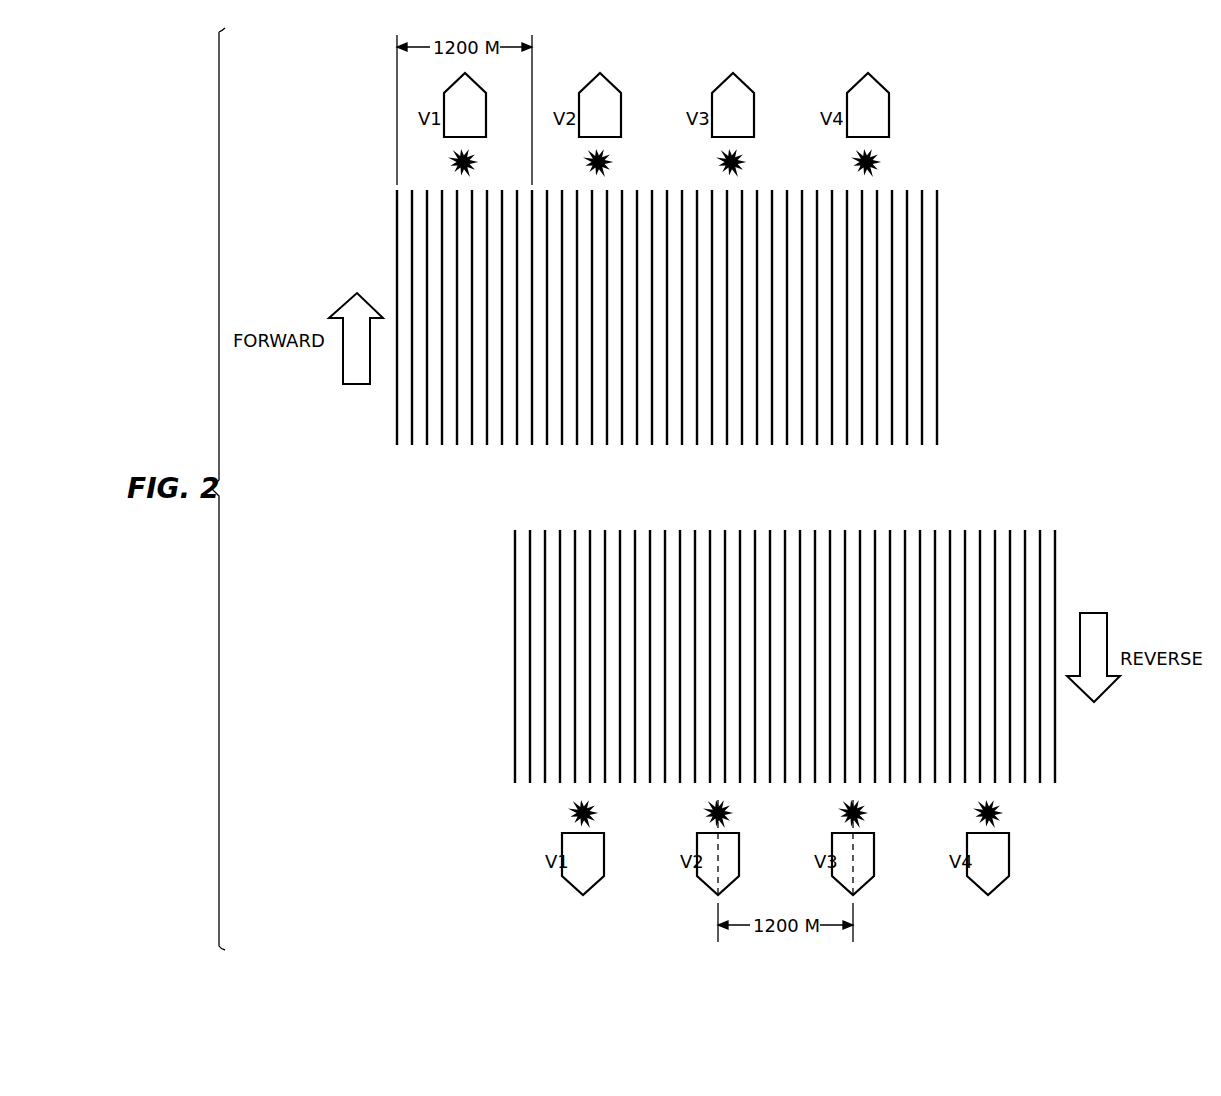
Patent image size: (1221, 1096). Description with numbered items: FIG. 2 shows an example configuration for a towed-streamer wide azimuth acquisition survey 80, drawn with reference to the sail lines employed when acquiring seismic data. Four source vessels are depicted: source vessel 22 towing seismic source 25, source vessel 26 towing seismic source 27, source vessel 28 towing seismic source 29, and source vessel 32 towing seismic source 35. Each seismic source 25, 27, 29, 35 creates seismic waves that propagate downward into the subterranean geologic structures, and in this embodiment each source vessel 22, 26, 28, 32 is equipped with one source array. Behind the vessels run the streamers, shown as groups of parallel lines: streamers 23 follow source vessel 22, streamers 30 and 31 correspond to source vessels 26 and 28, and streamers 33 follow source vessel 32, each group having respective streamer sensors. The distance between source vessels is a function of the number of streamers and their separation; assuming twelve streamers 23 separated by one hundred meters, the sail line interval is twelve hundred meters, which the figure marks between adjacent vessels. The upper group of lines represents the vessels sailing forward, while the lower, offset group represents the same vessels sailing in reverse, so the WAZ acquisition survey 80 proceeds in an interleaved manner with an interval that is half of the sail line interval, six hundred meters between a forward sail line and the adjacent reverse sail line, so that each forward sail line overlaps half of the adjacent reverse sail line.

The source vessel 22 is at (473, 86).
The seismic source 25 is at (478, 162).
The source vessel 26 is at (608, 86).
The seismic source 27 is at (613, 162).
The source vessel 28 is at (741, 86).
The seismic source 29 is at (746, 162).
The source vessel 32 is at (876, 86).
The seismic source 35 is at (881, 162).
The streamers 23 is at (532, 452).
The streamers 30 is at (667, 452).
The streamers 31 is at (802, 452).
The streamers 33 is at (937, 452).
The WAZ acquisition survey 80 is at (1124, 86).